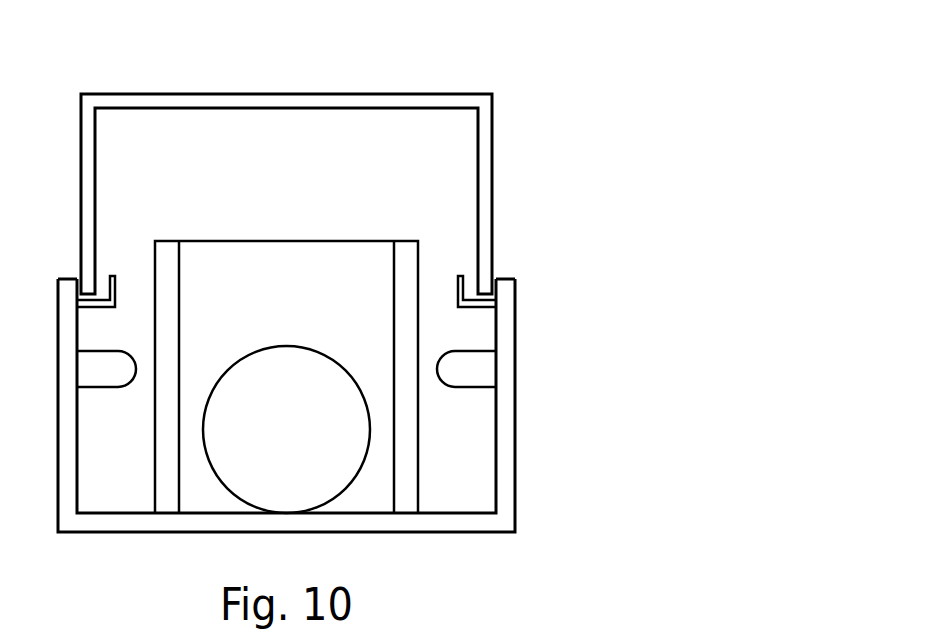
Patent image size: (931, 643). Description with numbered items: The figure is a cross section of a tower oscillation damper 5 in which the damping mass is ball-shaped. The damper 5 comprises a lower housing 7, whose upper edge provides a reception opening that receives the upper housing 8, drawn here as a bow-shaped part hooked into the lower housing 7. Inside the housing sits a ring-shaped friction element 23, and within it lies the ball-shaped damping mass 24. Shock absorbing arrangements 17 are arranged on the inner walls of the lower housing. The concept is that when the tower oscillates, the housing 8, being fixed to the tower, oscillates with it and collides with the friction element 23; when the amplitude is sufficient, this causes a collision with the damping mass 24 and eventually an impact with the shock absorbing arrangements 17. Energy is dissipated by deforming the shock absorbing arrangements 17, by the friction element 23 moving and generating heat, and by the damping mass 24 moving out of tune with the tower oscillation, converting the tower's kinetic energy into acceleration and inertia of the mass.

The tower oscillation damper 5 is at (470, 68).
The lower housing 7 is at (515, 480).
The upper housing 8 is at (493, 147).
The shock absorbing arrangement 17 is at (467, 388).
The ring-shaped friction element 23 is at (167, 463).
The damping mass 24 is at (223, 463).